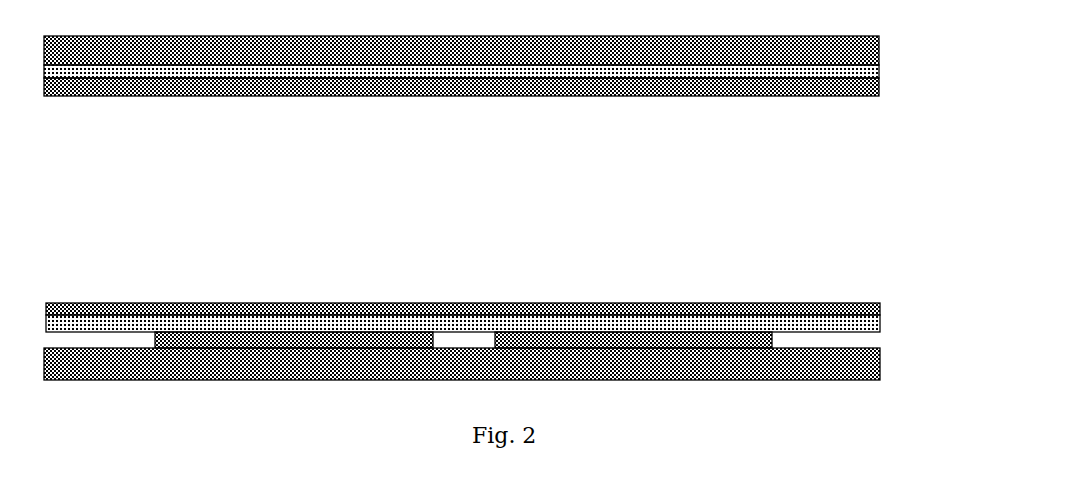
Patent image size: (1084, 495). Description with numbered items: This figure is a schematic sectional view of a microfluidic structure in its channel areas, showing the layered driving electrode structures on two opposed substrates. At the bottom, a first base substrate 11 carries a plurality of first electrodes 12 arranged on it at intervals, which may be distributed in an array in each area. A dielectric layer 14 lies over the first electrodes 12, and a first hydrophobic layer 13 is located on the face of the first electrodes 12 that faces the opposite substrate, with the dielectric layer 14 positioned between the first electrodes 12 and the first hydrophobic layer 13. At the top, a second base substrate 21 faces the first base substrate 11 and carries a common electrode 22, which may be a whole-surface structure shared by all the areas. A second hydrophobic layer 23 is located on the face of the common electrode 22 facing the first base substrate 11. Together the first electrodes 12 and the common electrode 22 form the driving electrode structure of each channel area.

The first base substrate 11 is at (850, 370).
The first electrodes 12 is at (772, 340).
The first hydrophobic layer 13 is at (880, 305).
The dielectric layer 14 is at (850, 322).
The second base substrate 21 is at (879, 50).
The common electrode 22 is at (846, 73).
The second hydrophobic layer 23 is at (879, 87).